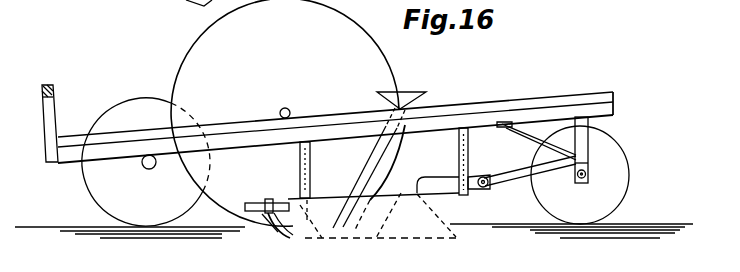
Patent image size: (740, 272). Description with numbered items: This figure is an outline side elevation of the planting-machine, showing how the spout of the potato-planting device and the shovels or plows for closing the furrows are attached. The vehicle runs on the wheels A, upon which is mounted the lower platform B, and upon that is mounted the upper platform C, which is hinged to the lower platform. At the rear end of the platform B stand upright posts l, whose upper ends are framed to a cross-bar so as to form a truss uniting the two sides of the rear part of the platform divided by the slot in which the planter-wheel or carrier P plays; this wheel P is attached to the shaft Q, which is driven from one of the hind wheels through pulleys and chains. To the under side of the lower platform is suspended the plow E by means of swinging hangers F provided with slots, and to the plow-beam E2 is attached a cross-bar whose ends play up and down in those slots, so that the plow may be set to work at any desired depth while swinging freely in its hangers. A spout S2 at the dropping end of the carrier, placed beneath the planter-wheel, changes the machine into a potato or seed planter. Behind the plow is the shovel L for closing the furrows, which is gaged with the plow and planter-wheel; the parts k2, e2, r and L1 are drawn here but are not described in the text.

The wheels A is at (355, 162).
The platform B is at (614, 108).
The platform C is at (505, 103).
The planter-wheel P is at (285, 113).
The shaft Q is at (285, 108).
The funnel k2 is at (399, 103).
The upright posts l is at (54, 108).
The swinging hangers F is at (300, 162).
The spout S2 is at (366, 158).
The shovel e2 is at (378, 215).
The plow E is at (412, 238).
The plow-beam E2 is at (482, 195).
The link rod r is at (530, 154).
The bracket L1 is at (262, 205).
The shovel L is at (272, 236).